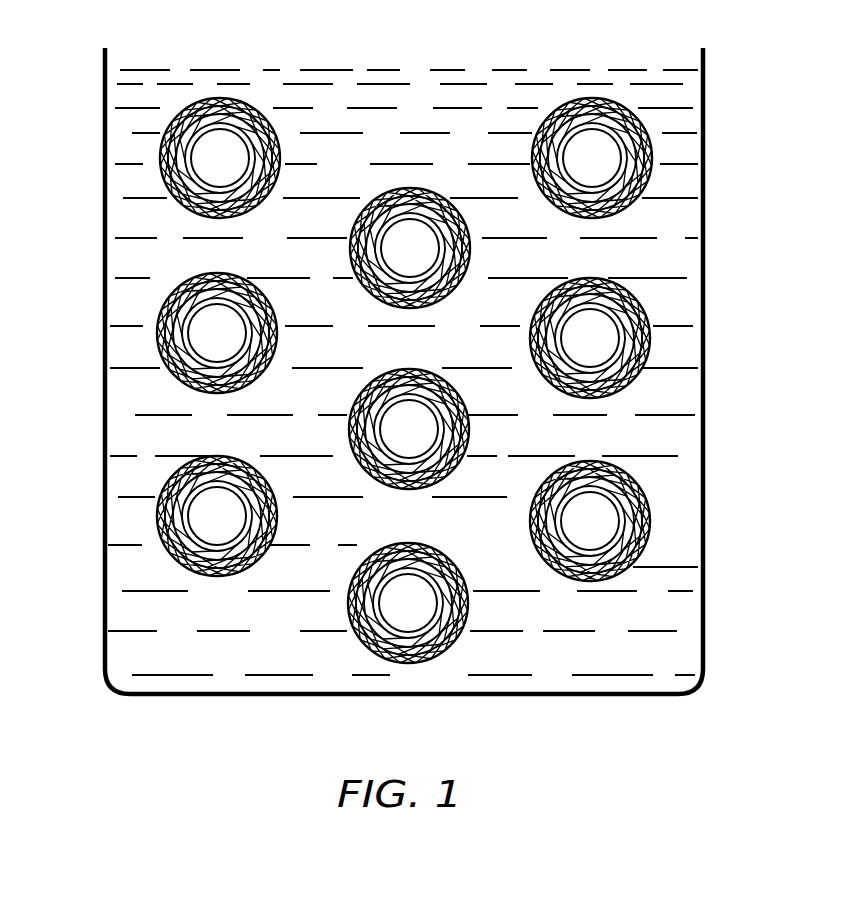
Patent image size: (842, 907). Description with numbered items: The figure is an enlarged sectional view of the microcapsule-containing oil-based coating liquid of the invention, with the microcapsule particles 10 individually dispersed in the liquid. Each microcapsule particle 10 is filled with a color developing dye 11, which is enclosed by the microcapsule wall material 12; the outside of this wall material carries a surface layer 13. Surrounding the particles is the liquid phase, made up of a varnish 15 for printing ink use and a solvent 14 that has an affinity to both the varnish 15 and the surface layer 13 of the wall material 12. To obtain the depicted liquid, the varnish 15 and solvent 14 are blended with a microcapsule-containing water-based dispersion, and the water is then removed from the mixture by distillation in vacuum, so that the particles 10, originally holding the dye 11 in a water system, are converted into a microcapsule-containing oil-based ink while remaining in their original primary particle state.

The microcapsule particles 10 is at (172, 128).
The color developing dye 11 is at (235, 152).
The microcapsule wall material 12 is at (238, 118).
The surface layer 13 is at (207, 112).
The solvent 14 is at (192, 112).
The varnish 15 is at (572, 637).